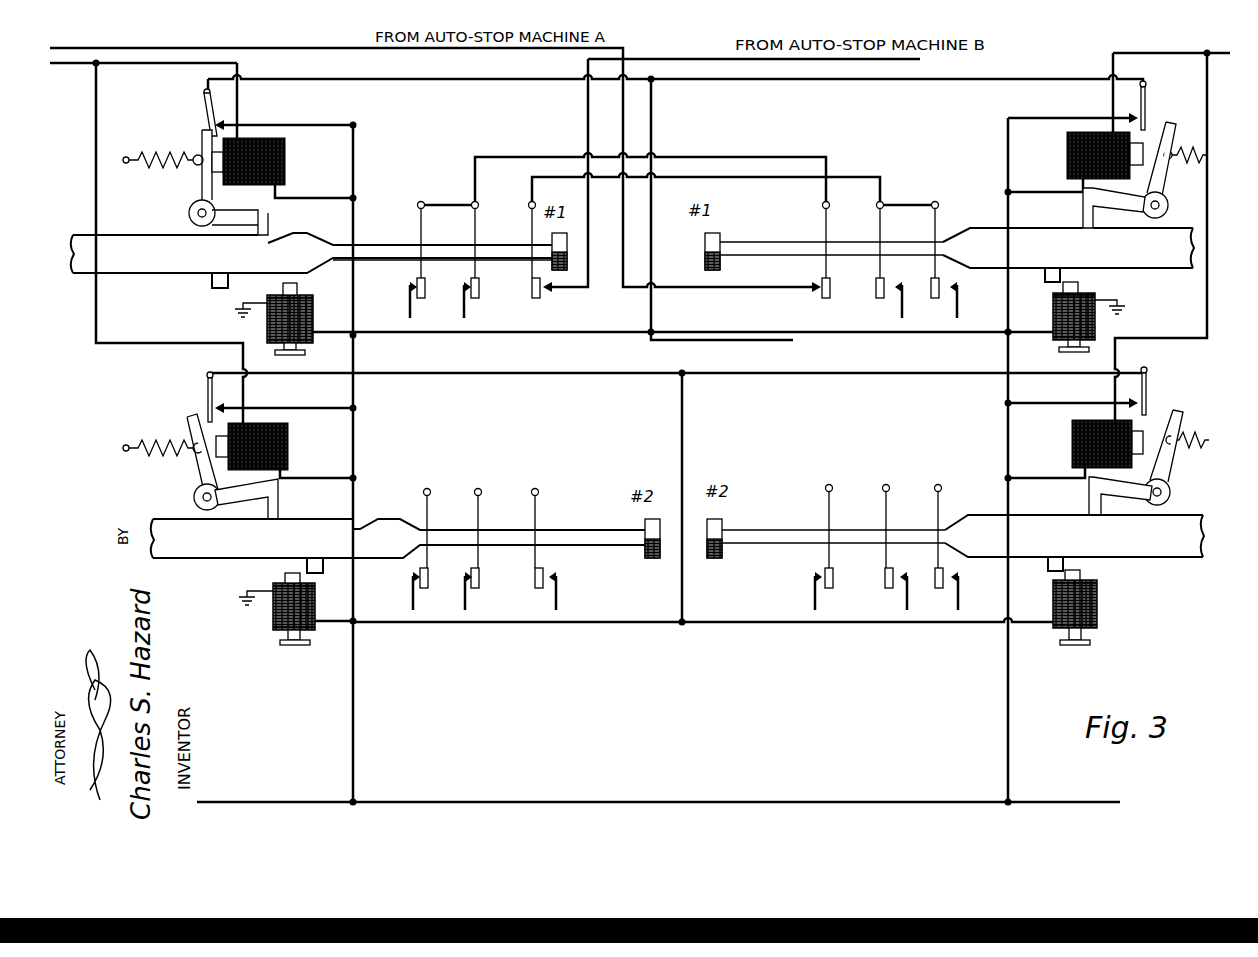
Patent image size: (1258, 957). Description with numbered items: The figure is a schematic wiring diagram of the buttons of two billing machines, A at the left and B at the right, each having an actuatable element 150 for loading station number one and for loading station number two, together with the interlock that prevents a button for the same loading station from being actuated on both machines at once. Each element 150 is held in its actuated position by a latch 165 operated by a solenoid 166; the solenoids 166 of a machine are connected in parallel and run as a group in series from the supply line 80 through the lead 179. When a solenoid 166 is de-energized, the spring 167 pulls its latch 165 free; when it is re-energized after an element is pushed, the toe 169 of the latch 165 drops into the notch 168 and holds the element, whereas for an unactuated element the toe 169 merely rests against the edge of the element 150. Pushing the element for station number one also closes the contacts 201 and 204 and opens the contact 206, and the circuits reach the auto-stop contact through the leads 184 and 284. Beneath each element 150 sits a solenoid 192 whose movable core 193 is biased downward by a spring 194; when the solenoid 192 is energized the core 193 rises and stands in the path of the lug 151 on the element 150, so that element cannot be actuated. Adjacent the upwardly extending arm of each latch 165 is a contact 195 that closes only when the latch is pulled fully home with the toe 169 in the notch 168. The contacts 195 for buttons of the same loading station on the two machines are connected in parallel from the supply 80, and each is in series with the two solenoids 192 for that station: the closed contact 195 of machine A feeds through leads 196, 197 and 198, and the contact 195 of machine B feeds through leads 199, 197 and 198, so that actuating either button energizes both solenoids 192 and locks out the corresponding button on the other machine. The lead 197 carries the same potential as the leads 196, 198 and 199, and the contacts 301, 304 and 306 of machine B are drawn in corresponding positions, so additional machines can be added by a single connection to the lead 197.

The lead 184 is at (324, 48).
The lead 284 is at (695, 48).
The lead 179 is at (62, 65).
The lead 196 is at (414, 81).
The lead 199 is at (853, 80).
The lead 197 is at (654, 118).
The lead 198 is at (563, 334).
The supply line 80 is at (447, 800).
The contact 195 is at (220, 113).
The spring 167 is at (176, 152).
The latch 165 is at (200, 189).
The toe 169 is at (270, 232).
The notch 168 is at (262, 241).
The lug 151 is at (212, 287).
The actuatable element 150 is at (381, 240).
The solenoid 166 is at (285, 158).
The solenoid 192 is at (313, 312).
The movable core 193 is at (298, 286).
The spring 194 is at (306, 350).
The contact 201 is at (425, 266).
The contact 204 is at (480, 266).
The contact 206 is at (547, 265).
The contact 306 is at (825, 263).
The contact 304 is at (885, 263).
The contact 301 is at (960, 265).